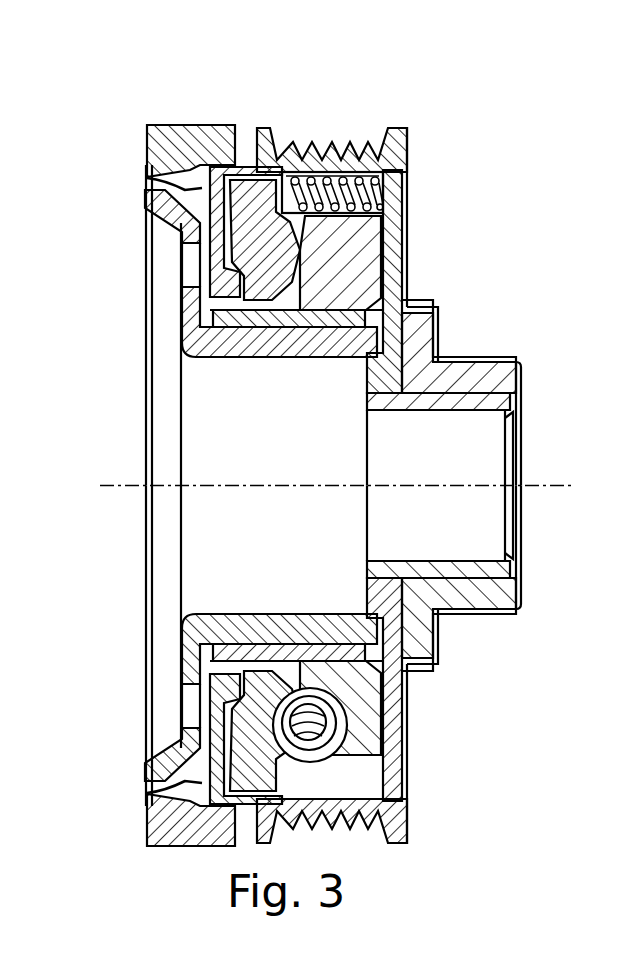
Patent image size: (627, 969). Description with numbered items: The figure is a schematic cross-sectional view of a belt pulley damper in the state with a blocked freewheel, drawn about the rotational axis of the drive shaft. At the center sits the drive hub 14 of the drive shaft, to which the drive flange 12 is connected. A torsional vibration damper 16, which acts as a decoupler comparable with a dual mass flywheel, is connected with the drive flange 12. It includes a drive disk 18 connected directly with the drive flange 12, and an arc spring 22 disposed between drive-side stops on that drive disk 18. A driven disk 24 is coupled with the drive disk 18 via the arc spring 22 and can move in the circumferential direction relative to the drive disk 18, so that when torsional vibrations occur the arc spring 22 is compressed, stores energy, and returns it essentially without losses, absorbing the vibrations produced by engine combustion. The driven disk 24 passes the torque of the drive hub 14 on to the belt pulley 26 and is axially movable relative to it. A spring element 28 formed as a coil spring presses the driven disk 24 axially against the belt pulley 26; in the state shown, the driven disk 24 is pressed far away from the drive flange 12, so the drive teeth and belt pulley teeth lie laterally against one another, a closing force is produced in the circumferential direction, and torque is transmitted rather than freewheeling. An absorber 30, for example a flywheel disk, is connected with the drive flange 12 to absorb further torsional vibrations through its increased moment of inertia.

The drive flange 12 is at (393, 222).
The drive hub 14 is at (487, 383).
The torsional vibration damper 16 is at (407, 65).
The drive disk 18 is at (372, 257).
The arc spring 22 is at (327, 165).
The driven disk 24 is at (230, 197).
The belt pulley 26 is at (187, 126).
The spring element 28 is at (360, 167).
The absorber 30 is at (166, 263).